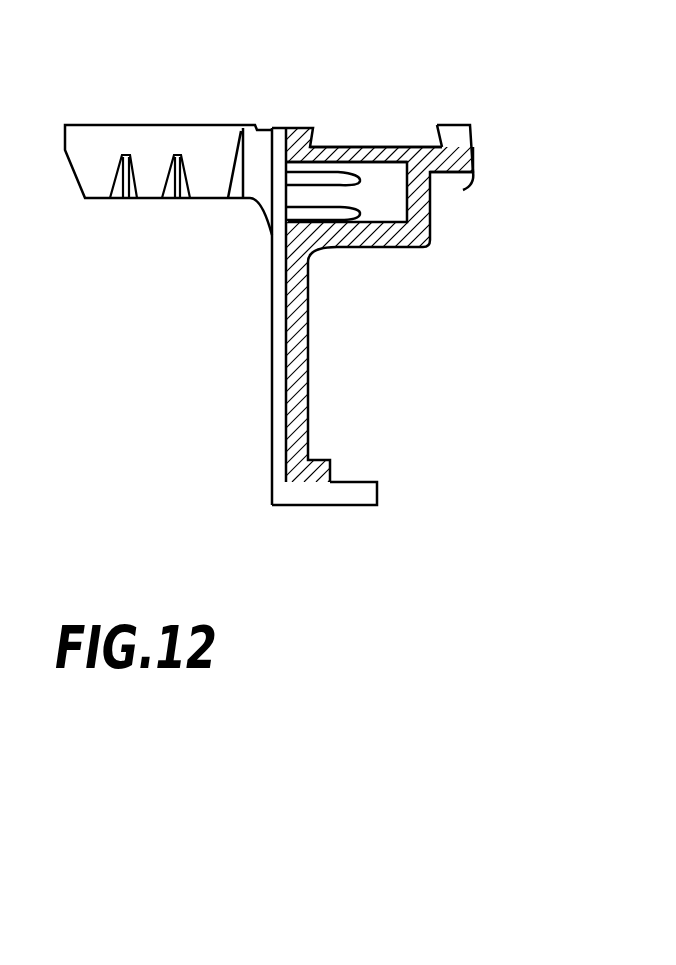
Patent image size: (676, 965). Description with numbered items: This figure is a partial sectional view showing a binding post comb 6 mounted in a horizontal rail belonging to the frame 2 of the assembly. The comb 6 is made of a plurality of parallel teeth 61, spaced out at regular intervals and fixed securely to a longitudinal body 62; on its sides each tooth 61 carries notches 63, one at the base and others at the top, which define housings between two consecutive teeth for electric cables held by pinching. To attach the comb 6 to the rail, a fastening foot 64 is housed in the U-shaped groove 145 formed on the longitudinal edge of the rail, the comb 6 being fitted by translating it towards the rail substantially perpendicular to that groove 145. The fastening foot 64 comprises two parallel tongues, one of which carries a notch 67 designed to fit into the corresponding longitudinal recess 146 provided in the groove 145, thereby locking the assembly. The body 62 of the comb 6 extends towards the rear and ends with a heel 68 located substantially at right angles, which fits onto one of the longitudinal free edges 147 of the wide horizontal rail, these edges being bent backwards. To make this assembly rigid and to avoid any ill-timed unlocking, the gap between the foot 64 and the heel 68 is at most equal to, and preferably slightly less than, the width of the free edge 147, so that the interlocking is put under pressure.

The housing 2 is at (486, 158).
The binding post comb 6 is at (106, 93).
The teeth 61 is at (147, 133).
The longitudinal body 62 is at (275, 342).
The notches 63 is at (118, 200).
The fastening foot 64 is at (276, 222).
The notch 67 is at (349, 150).
The heel 68 is at (325, 490).
The U-shaped groove 145 is at (400, 196).
The longitudinal recess 146 is at (352, 150).
The longitudinal free edges 147 is at (302, 368).